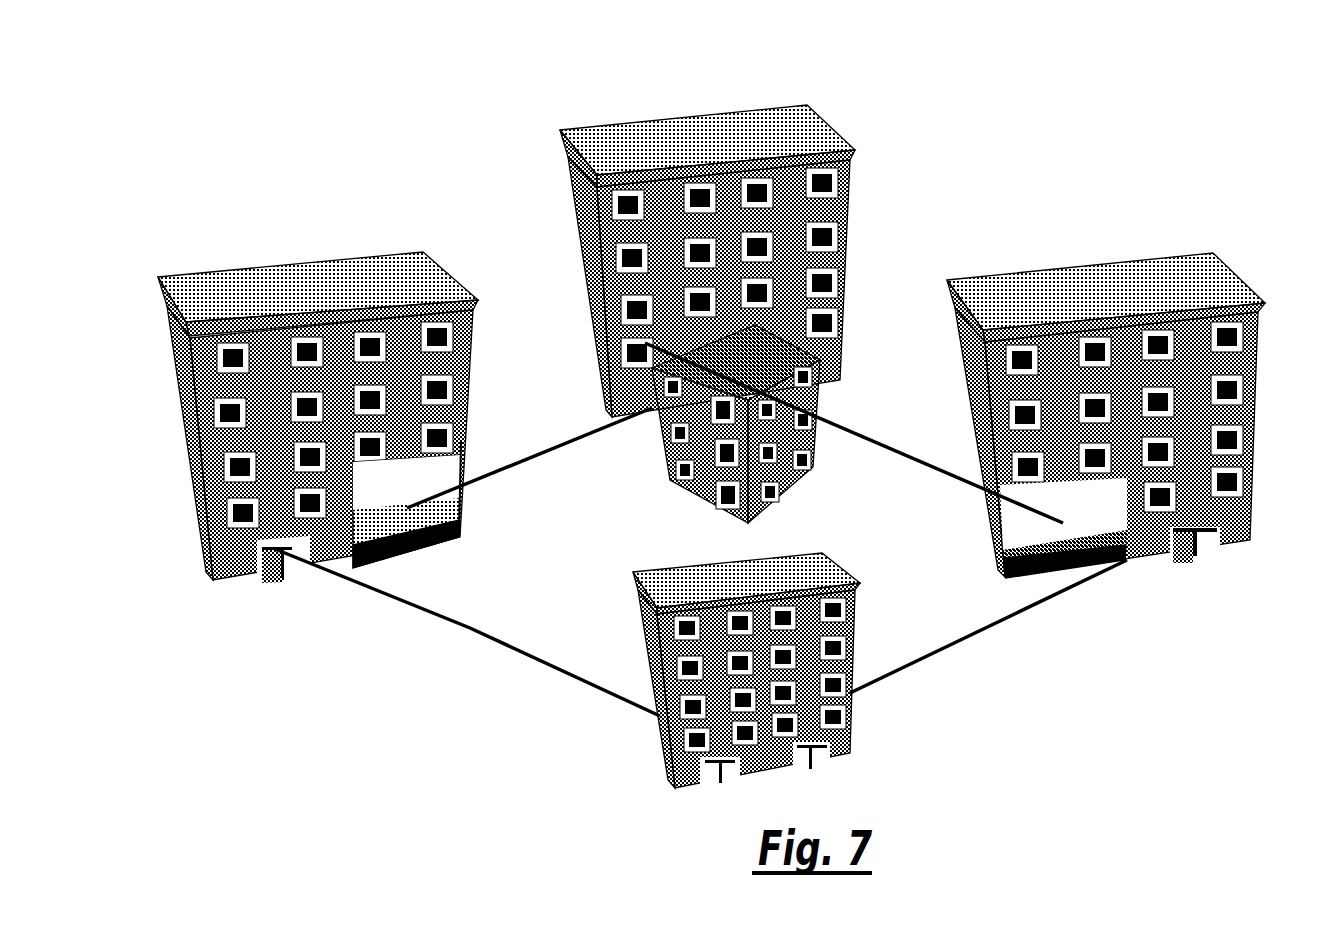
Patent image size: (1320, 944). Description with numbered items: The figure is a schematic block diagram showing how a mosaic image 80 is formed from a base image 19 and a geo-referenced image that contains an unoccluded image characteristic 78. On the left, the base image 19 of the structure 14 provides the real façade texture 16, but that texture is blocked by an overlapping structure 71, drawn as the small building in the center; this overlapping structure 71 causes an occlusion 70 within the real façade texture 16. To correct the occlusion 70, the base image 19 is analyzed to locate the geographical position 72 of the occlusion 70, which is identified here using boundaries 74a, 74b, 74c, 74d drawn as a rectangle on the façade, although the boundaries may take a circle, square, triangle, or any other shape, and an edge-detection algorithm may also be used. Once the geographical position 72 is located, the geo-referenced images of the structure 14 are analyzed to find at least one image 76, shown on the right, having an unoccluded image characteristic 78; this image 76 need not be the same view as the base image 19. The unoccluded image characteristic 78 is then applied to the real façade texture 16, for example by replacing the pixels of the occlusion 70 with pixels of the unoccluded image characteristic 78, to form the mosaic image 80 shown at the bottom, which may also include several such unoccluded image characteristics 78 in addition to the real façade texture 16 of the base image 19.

The structure 14 is at (711, 424).
The real façade texture 16 is at (472, 357).
The base image 19 is at (359, 220).
The occlusion 70 is at (447, 485).
The overlapping structure 71 is at (818, 395).
The geographical position 72 is at (489, 537).
The boundary 74a is at (403, 560).
The boundary 74b is at (463, 513).
The boundary 74c is at (463, 443).
The boundary 74d is at (337, 570).
The image having an unoccluded image characteristic 76 is at (1172, 231).
The unoccluded image characteristic 78 is at (1248, 510).
The mosaic image 80 is at (819, 535).